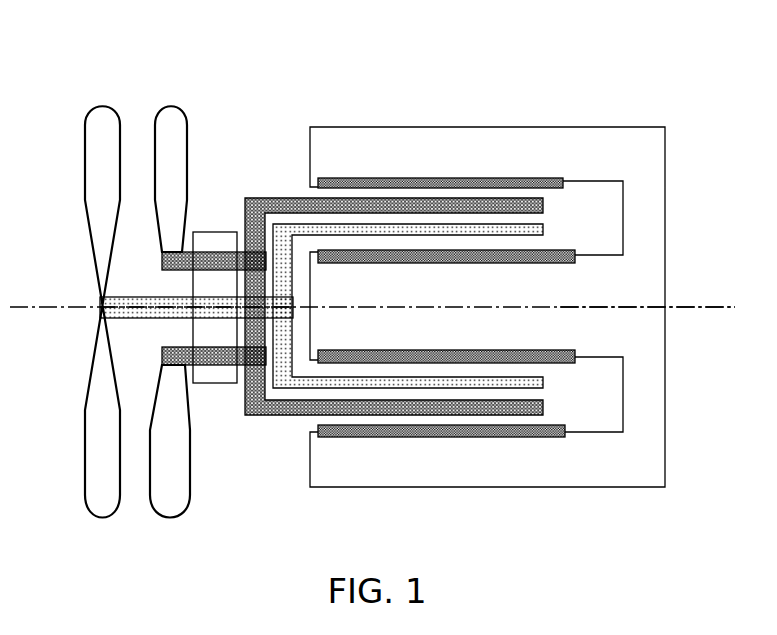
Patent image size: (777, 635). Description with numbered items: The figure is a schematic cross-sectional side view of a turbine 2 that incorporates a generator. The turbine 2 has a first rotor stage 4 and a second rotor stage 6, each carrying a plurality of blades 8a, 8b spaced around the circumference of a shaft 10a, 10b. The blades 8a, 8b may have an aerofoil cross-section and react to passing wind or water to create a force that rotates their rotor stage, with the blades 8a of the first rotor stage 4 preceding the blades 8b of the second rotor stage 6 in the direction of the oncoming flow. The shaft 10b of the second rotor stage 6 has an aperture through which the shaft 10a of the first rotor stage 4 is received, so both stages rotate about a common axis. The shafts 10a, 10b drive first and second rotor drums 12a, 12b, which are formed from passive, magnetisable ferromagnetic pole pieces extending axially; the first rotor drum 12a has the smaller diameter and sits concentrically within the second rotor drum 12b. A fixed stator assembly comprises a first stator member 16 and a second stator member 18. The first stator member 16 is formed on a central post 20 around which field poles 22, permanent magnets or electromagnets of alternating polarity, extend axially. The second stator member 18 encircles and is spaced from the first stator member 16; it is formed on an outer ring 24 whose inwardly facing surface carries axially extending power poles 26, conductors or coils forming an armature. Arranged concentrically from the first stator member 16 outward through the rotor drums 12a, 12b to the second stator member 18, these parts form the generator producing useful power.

The turbine 2 is at (533, 100).
The first rotor stage 4 is at (110, 268).
The second rotor stage 6 is at (182, 268).
The blades of first rotor stage 8a is at (87, 144).
The blades of second rotor stage 8b is at (157, 144).
The shaft of first rotor stage 10a is at (122, 297).
The shaft of second rotor stage 10b is at (203, 250).
The first rotor drum 12a is at (358, 226).
The second rotor drum 12b is at (286, 198).
The first stator member 16 is at (612, 297).
The second stator member 18 is at (598, 148).
The central post 20 is at (377, 300).
The field poles 22 is at (483, 263).
The outer ring 24 is at (431, 162).
The power poles 26 is at (540, 155).